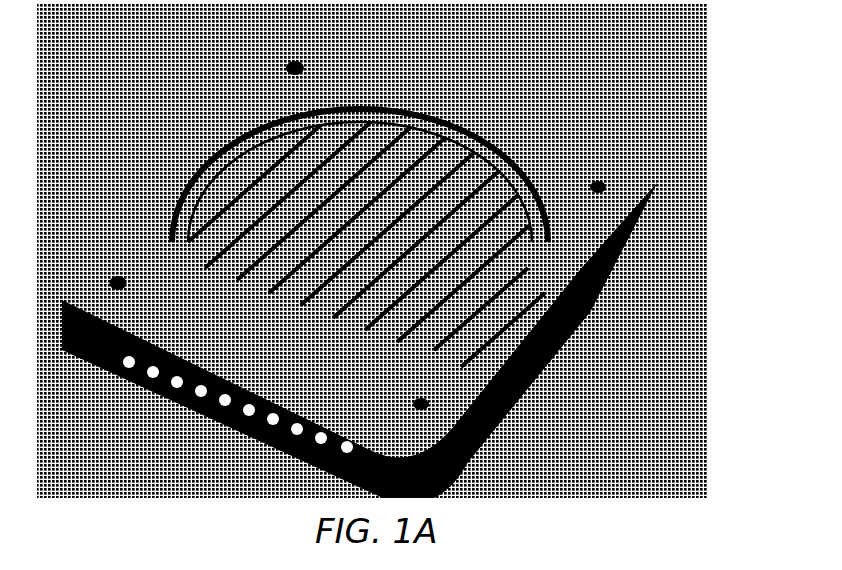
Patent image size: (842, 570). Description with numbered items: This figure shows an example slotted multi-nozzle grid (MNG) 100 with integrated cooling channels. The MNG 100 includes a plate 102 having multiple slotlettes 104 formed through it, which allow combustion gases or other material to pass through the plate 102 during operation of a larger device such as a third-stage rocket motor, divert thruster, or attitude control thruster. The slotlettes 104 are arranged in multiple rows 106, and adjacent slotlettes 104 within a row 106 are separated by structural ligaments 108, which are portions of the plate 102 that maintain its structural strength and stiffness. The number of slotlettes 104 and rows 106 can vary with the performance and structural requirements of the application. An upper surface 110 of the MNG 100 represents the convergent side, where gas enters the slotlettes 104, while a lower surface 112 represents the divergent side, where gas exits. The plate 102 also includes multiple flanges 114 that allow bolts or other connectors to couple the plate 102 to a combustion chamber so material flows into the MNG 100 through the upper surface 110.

The slotted multi-nozzle grid (MNG) 100 is at (123, 426).
The plate 102 is at (166, 165).
The slotlettes 104 is at (308, 160).
The rows 106 is at (449, 137).
The structural ligaments 108 is at (443, 234).
The upper surface 110 is at (518, 190).
The lower surface 112 is at (594, 314).
The flanges 114 is at (285, 62).